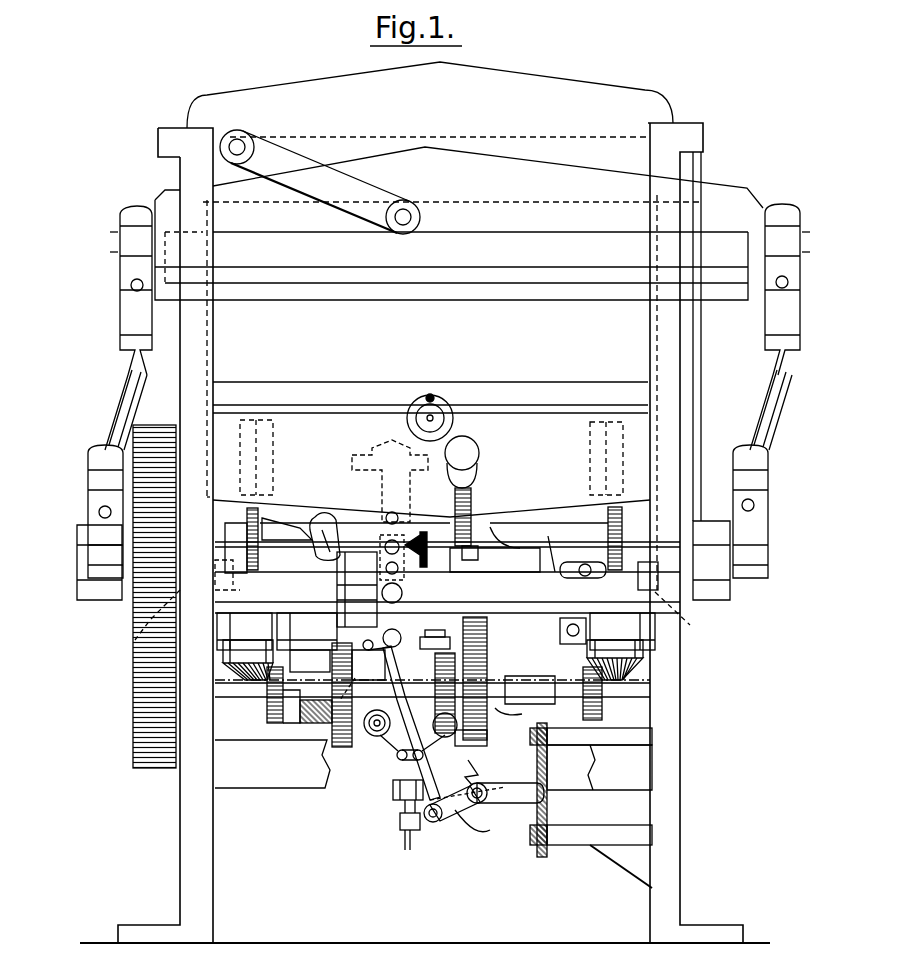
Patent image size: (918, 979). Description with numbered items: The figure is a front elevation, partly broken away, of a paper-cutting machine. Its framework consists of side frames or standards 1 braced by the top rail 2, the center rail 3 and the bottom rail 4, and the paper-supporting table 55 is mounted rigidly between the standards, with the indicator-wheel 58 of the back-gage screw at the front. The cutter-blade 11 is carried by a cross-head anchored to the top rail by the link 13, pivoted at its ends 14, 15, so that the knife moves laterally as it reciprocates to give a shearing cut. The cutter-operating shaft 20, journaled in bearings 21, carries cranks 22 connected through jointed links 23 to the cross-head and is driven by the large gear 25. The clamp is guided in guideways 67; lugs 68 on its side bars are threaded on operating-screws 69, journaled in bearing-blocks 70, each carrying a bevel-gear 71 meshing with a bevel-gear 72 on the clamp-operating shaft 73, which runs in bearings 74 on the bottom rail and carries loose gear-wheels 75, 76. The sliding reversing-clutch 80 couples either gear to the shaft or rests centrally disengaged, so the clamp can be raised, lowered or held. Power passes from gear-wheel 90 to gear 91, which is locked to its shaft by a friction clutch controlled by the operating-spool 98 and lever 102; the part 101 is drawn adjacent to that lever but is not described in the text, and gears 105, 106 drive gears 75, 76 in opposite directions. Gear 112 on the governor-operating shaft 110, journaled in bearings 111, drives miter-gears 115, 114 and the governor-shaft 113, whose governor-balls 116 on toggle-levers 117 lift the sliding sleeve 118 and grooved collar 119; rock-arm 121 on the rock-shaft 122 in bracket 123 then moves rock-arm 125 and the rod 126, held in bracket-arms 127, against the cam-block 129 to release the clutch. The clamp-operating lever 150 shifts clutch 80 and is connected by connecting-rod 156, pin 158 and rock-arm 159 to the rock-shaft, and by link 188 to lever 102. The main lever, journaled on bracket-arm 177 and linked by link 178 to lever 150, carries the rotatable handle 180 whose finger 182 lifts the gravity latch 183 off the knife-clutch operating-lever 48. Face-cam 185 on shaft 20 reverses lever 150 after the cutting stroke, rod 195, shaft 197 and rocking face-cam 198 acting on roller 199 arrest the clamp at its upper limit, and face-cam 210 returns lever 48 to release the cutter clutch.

The side frames or standards 1 is at (190, 780).
The top rail 2 is at (437, 66).
The center rail 3 is at (431, 481).
The bottom rail 4 is at (285, 776).
The cutter-blade 11 is at (421, 295).
The link 13 is at (315, 180).
The pivotal end of link 14 is at (403, 216).
The pivotal end of link 15 is at (238, 146).
The cutter-operating shaft 20 is at (283, 596).
The bearings 21 is at (135, 626).
The cranks 22 is at (118, 578).
The jointed links 23 is at (123, 378).
The large gear 25 is at (148, 690).
The operating-lever of the knife-driving clutch 48 is at (318, 518).
The paper-supporting table 55 is at (496, 394).
The indicator-wheel 58 is at (433, 414).
The guideways 67 is at (209, 356).
The blocks or lugs 68 is at (264, 462).
The operating-screws 69 is at (260, 512).
The bearing-blocks 70 is at (436, 631).
The bevel-gear 71 is at (250, 690).
The bevel-gear 72 is at (272, 706).
The clamp-operating shaft 73 is at (505, 676).
The bearings 74 is at (297, 722).
The gear-wheel 75 is at (343, 690).
The gear-wheel 76 is at (487, 645).
The sliding reversing-clutch 80 is at (355, 681).
The gear-wheel 90 is at (486, 539).
The gear 91 is at (478, 745).
The operating-spool 98 is at (531, 680).
The pivot pin 101 is at (566, 637).
The operating-lever 102 is at (562, 620).
The gear-wheel 105 is at (330, 740).
The gear-wheel 106 is at (447, 735).
The governor-operating shaft 110 is at (310, 690).
The bearings 111 is at (437, 645).
The gear-wheel 112 is at (340, 635).
The governor-shaft 113 is at (404, 849).
The miter-gear 114 is at (395, 635).
The miter-gear 115 is at (428, 626).
The governor-balls 116 is at (376, 736).
The toggle-levers 117 is at (403, 760).
The vertically-sliding sleeve 118 is at (393, 788).
The grooved collar 119 is at (400, 817).
The rock-arm 121 is at (405, 824).
The rock-shaft 122 is at (479, 829).
The bracket 123 is at (490, 768).
The rock-arm 125 is at (500, 797).
The vertically-movable rod 126 is at (547, 770).
The bracket-arms 127 is at (635, 735).
The cam-block 129 is at (530, 710).
The clamp-operating lever 150 is at (372, 457).
The connecting-rod 156 is at (420, 762).
The pin 158 is at (432, 823).
The rock-arm 159 is at (458, 805).
The bracket-arm 177 is at (474, 494).
The link 178 is at (406, 532).
The rotatable handle 180 is at (462, 462).
The finger 182 is at (500, 522).
The gravity latch or hook 183 is at (292, 522).
The face-cam 185 is at (380, 595).
The link 188 is at (495, 560).
The rod 195 is at (697, 432).
The shaft 197 is at (550, 535).
The rocking face-cam 198 is at (400, 571).
The antifriction-roller 199 is at (399, 512).
The face-cam 210 is at (343, 552).